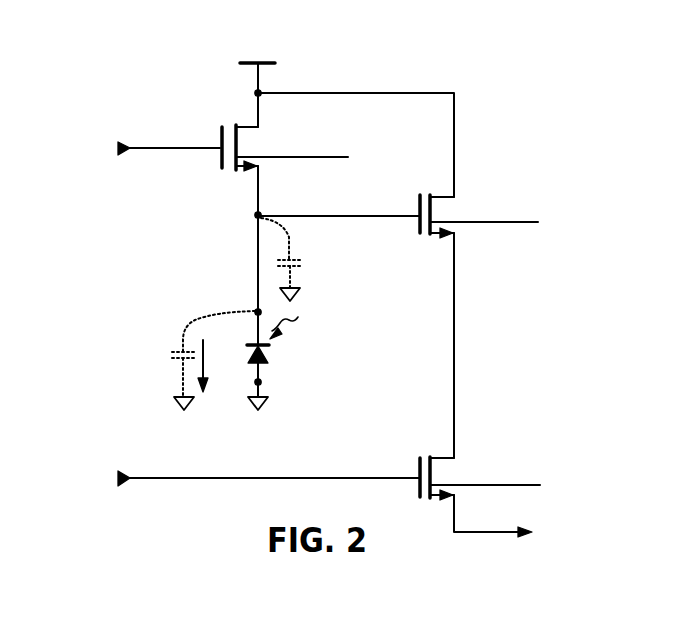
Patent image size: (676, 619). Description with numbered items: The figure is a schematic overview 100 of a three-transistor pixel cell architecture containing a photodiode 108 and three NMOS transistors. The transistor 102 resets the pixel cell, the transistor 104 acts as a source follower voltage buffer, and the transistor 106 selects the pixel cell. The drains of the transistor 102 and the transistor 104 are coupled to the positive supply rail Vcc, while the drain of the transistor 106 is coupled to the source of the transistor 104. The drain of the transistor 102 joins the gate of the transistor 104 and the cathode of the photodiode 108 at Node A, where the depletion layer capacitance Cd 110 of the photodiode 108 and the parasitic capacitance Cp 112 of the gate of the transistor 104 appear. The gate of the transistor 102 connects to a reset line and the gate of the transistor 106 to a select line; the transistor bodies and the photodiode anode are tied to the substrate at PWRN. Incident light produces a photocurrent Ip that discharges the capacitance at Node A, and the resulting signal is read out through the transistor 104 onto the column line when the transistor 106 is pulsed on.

The schematic overview 100 is at (118, 86).
The NMOS transistor 102 is at (243, 126).
The NMOS transistor 104 is at (435, 194).
The NMOS transistor 106 is at (440, 455).
The photodiode 108 is at (268, 358).
The diode capacitance Cd 110 is at (170, 360).
The parasitic capacitance Cp 112 is at (300, 266).